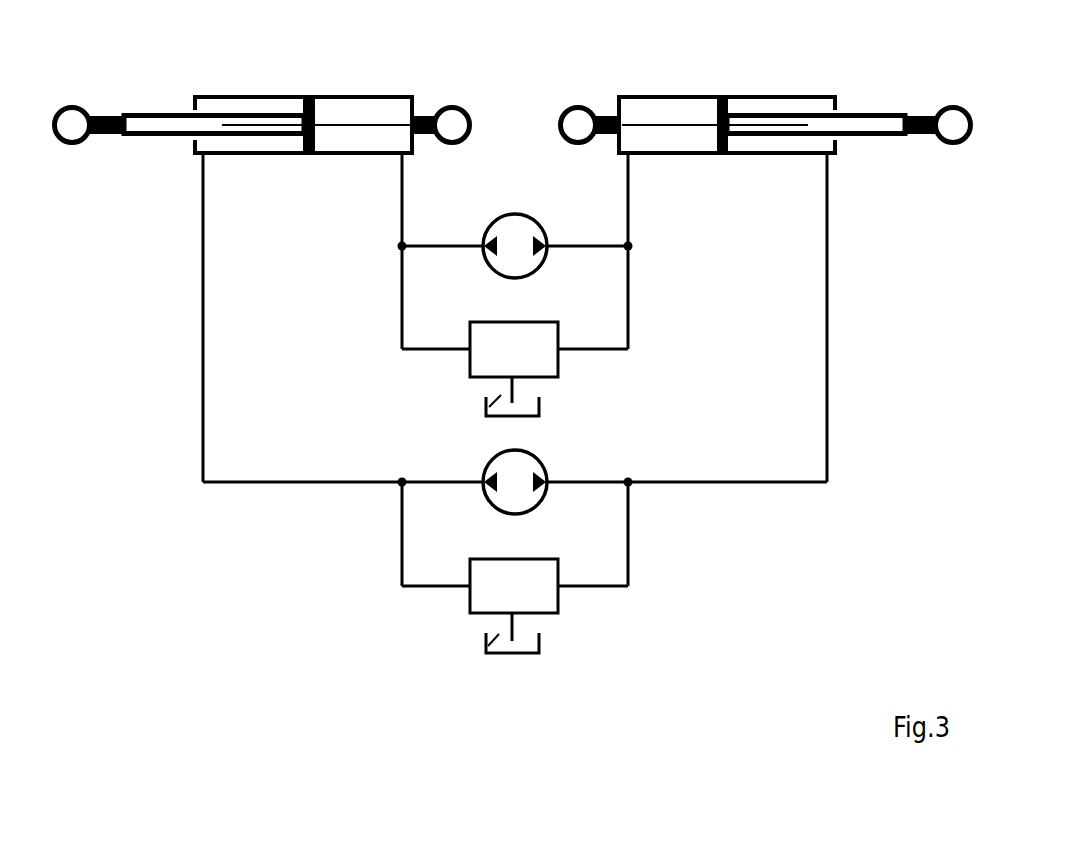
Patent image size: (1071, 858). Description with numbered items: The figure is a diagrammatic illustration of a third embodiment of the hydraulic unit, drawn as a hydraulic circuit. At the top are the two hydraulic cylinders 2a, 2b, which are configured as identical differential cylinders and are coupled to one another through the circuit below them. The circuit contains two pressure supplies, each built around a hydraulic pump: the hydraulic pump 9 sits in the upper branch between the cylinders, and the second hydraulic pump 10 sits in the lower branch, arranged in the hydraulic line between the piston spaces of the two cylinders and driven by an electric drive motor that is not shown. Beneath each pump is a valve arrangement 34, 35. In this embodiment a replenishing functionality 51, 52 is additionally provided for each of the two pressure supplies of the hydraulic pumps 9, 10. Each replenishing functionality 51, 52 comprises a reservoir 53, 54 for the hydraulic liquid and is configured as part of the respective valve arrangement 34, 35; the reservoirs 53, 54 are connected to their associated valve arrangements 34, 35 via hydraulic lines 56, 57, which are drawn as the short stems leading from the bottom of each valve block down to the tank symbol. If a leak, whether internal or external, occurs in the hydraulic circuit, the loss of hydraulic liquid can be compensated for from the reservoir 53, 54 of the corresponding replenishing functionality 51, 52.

The hydraulic cylinder 2a is at (287, 91).
The hydraulic cylinder 2b is at (707, 91).
The hydraulic pump 9 is at (515, 228).
The second hydraulic pump 10 is at (523, 462).
The valve arrangement 34 is at (533, 341).
The valve arrangement 35 is at (517, 582).
The replenishing functionality 51 is at (552, 397).
The replenishing functionality 52 is at (548, 631).
The reservoir 53 is at (490, 406).
The reservoir 54 is at (490, 645).
The hydraulic line 56 is at (510, 385).
The hydraulic line 57 is at (510, 622).